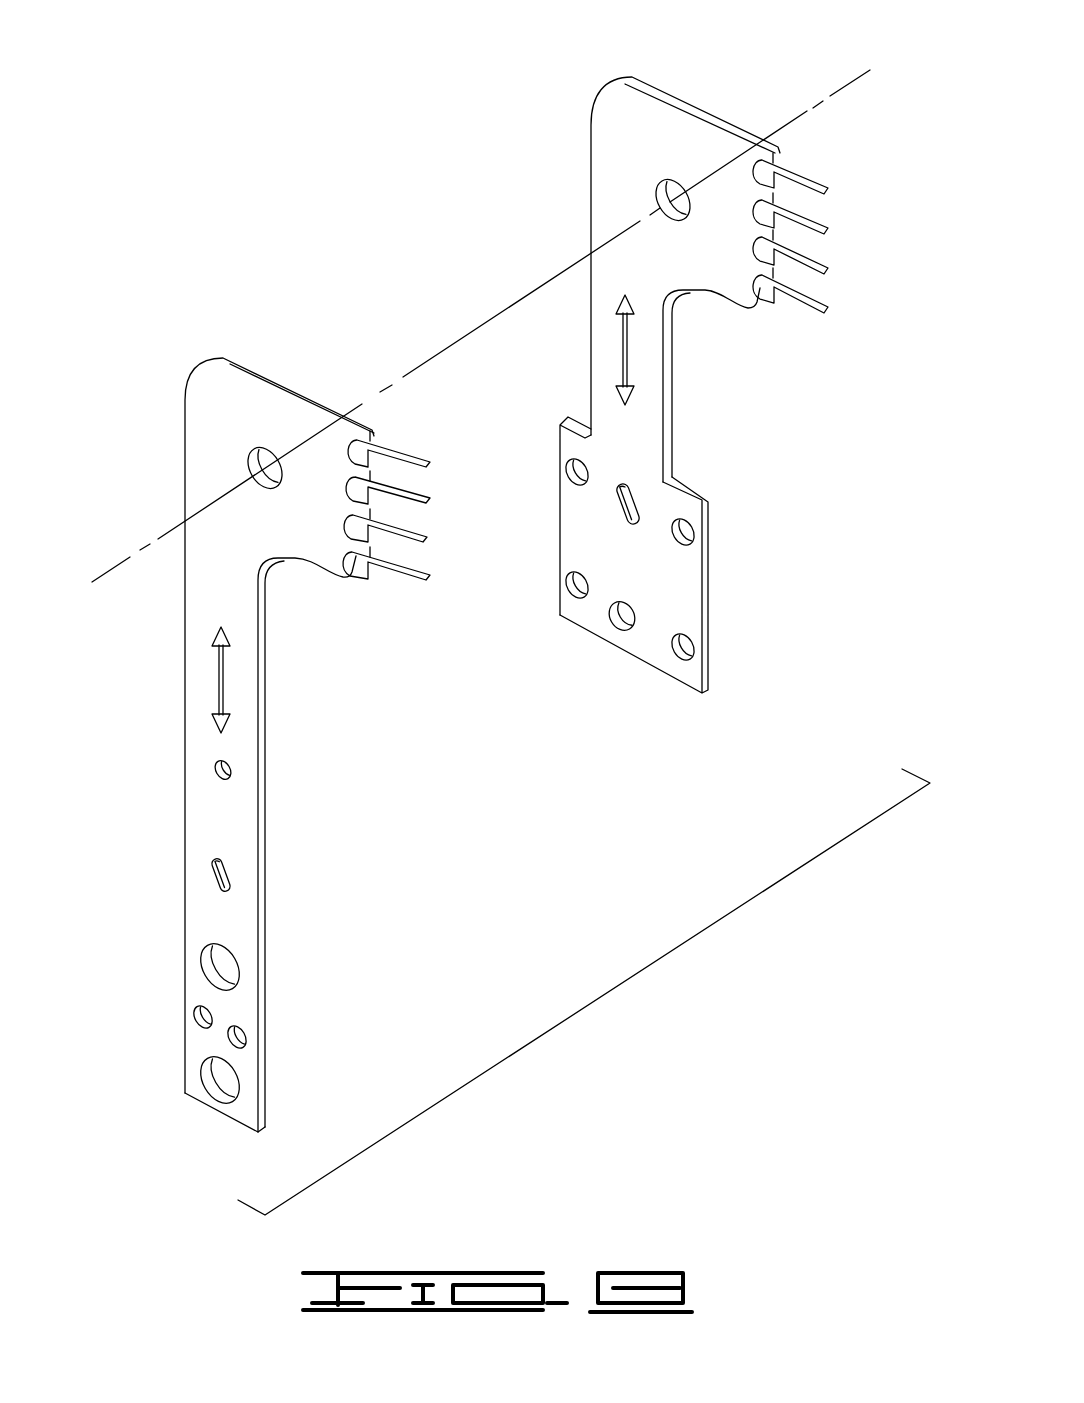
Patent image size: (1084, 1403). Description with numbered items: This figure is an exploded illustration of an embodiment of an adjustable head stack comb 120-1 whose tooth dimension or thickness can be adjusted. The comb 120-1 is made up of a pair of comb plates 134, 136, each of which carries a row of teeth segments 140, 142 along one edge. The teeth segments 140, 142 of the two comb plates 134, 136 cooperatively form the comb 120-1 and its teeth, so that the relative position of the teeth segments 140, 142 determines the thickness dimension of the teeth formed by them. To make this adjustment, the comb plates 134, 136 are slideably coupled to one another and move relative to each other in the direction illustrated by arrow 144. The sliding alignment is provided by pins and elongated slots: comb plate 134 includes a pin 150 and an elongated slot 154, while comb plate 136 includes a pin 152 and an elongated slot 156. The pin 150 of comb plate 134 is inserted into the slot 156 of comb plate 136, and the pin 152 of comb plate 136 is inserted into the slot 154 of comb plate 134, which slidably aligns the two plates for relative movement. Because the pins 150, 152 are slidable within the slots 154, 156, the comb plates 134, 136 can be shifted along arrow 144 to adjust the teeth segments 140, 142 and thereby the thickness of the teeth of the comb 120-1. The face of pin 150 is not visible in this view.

The comb plate 134 is at (293, 383).
The comb plate 136 is at (685, 98).
The teeth segments 140 is at (405, 440).
The teeth segments 142 is at (800, 168).
The arrow 144 is at (216, 682).
The pin 150 is at (214, 770).
The pin 152 is at (619, 625).
The elongated slot 154 is at (214, 878).
The elongated slot 156 is at (634, 504).
The adjustable head stack comb 120-1 is at (624, 983).